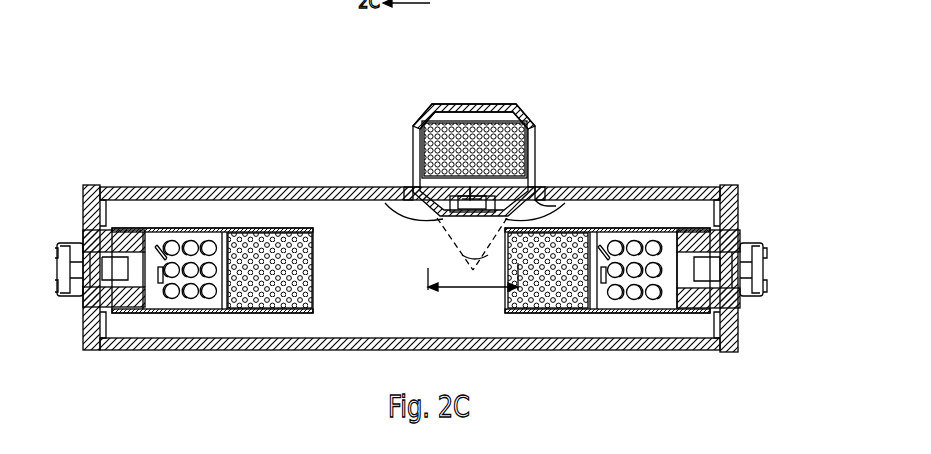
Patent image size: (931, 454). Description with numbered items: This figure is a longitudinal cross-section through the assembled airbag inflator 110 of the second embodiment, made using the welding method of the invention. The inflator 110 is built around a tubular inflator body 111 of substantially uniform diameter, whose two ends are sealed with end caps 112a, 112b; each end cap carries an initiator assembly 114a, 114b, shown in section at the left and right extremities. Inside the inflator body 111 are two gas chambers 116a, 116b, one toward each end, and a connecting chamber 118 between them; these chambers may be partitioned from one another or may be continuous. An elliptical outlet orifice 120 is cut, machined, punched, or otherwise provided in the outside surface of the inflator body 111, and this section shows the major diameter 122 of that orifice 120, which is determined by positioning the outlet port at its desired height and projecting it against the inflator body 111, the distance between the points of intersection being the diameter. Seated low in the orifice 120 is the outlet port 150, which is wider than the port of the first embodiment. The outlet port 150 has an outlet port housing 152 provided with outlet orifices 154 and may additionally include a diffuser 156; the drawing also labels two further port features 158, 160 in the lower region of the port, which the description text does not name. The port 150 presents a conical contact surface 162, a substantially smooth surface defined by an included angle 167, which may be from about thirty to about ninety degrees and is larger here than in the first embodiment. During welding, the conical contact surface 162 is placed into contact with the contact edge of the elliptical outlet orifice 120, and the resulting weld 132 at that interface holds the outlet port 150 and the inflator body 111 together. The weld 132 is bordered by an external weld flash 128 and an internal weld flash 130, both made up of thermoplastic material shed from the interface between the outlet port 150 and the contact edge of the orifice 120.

The inflator 110 is at (656, 171).
The inflator body 111 is at (188, 170).
The end cap 112a is at (736, 185).
The end cap 112b is at (85, 197).
The initiator assembly 114a is at (758, 225).
The initiator assembly 114b is at (71, 230).
The gas chamber 116a is at (650, 332).
The gas chamber 116b is at (170, 330).
The connecting chamber 118 is at (492, 318).
The elliptical outlet orifice 120 is at (530, 198).
The major diameter 122 is at (470, 288).
The external weld flash 128 is at (538, 186).
The internal weld flash 130 is at (562, 208).
The weld 132 is at (408, 190).
The outlet port 150 is at (483, 135).
The outlet port housing 152 is at (422, 108).
The outlet orifices 154 is at (540, 142).
The diffuser 156 is at (492, 108).
The nozzle 158 is at (468, 200).
The body 160 is at (443, 188).
The conical contact surface 162 is at (425, 210).
The included angle 167 is at (465, 258).